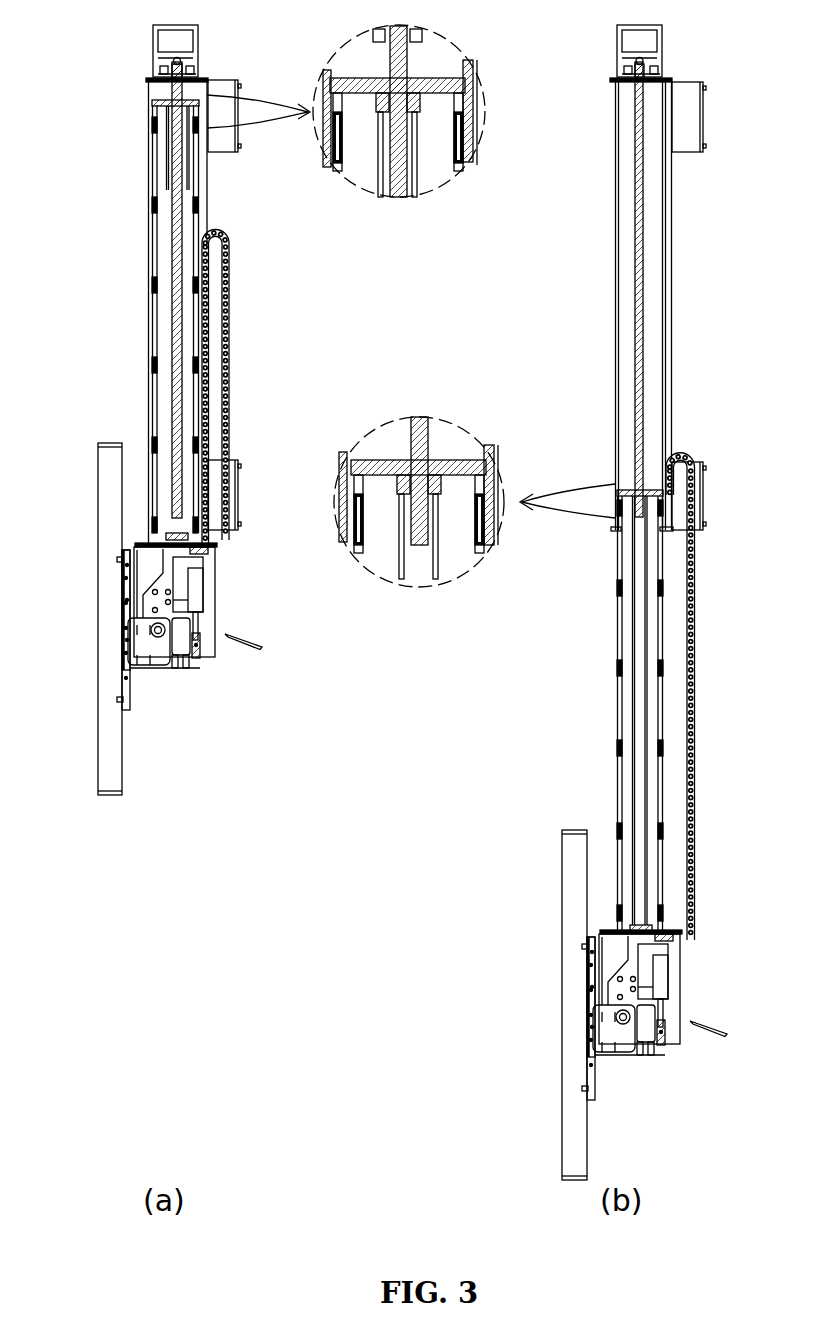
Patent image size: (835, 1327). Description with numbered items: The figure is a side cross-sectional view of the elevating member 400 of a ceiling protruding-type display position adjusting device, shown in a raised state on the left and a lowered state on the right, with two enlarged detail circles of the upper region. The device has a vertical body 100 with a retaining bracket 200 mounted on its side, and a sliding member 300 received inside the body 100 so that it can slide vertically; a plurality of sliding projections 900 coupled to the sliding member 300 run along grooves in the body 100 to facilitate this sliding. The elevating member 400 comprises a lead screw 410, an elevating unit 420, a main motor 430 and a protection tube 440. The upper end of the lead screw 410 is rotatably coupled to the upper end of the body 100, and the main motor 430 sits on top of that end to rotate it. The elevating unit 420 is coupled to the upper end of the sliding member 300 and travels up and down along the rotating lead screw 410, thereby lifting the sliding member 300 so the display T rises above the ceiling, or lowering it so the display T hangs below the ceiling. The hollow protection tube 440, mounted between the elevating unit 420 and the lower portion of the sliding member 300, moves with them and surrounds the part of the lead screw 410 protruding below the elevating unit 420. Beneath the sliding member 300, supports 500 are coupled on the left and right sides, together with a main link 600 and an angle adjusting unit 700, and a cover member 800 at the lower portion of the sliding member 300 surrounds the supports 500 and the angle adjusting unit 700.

The body 100 is at (205, 176).
The retaining bracket 200 is at (224, 86).
The sliding member 300 is at (200, 214).
The elevating member 400 is at (70, 58).
The lead screw 410 is at (177, 140).
The elevating unit 420 is at (172, 103).
The main motor 430 is at (163, 48).
The protection tube 440 is at (167, 183).
The supports 500 is at (162, 574).
The main link 600 is at (144, 636).
The angle adjusting unit 700 is at (221, 626).
The cover member 800 is at (208, 578).
The sliding projections 900 is at (148, 280).
The display T is at (108, 441).